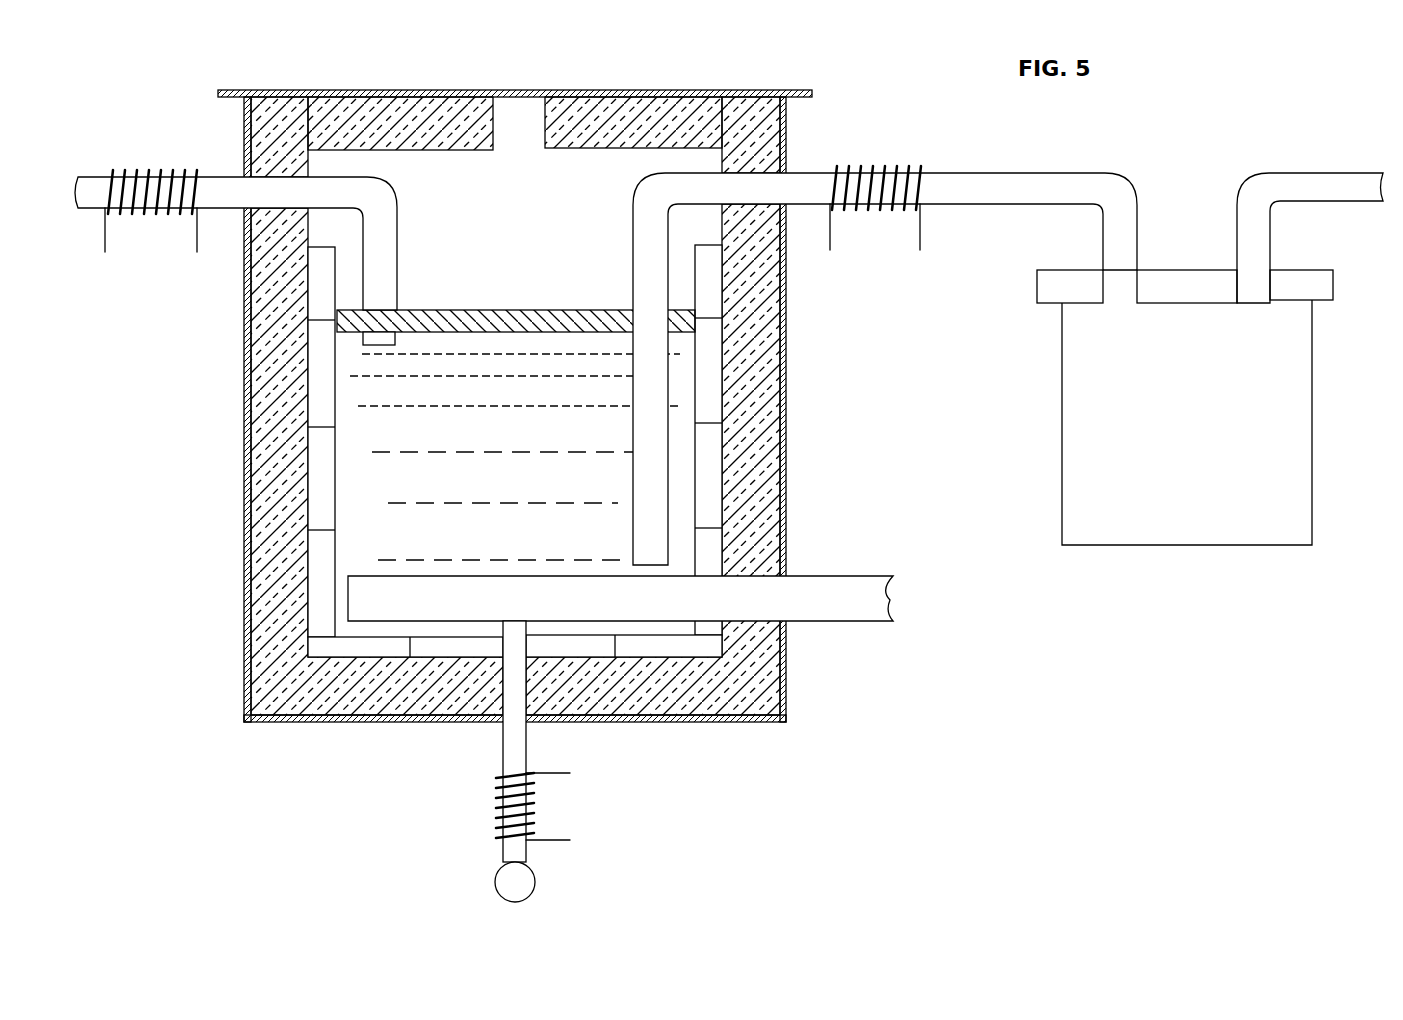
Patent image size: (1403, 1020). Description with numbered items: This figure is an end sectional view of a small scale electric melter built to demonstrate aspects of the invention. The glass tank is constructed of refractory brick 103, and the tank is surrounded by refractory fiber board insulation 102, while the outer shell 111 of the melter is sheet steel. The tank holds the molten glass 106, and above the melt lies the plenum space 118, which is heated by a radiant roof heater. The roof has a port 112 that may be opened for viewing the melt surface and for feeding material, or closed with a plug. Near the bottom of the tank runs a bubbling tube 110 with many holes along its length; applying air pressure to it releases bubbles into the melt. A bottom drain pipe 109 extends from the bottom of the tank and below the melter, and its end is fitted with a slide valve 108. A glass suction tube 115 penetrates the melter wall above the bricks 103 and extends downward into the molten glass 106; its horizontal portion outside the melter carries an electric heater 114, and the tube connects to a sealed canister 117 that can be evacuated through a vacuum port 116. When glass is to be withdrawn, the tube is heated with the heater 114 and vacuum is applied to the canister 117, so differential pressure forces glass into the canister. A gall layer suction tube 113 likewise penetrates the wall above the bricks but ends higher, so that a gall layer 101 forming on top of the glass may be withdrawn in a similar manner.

The gall layer 101 is at (518, 308).
The refractory fiber board insulation 102 is at (765, 340).
The refractory brick 103 is at (710, 462).
The molten glass 106 is at (618, 487).
The slide valve 108 is at (537, 882).
The bottom drain pipe 109 is at (500, 745).
The bubbling tube 110 is at (518, 595).
The outer shell 111 is at (355, 96).
The port 112 is at (542, 118).
The gall layer suction tube 113 is at (222, 176).
The electric heater 114 is at (155, 212).
The glass suction tube 115 is at (1022, 171).
The vacuum port 116 is at (1297, 168).
The sealed canister 117 is at (1312, 428).
The plenum space 118 is at (612, 175).